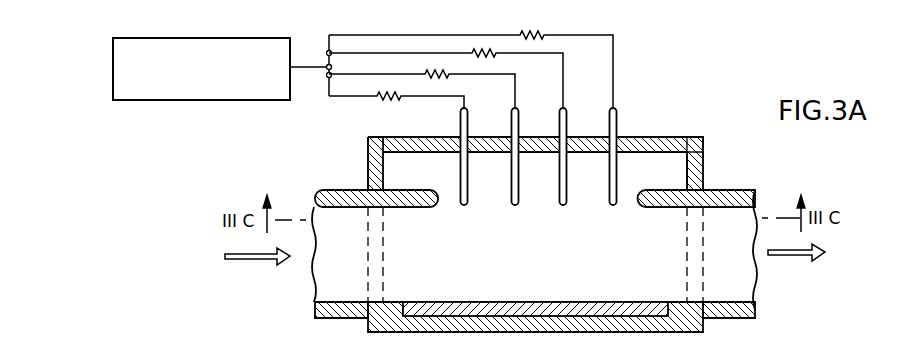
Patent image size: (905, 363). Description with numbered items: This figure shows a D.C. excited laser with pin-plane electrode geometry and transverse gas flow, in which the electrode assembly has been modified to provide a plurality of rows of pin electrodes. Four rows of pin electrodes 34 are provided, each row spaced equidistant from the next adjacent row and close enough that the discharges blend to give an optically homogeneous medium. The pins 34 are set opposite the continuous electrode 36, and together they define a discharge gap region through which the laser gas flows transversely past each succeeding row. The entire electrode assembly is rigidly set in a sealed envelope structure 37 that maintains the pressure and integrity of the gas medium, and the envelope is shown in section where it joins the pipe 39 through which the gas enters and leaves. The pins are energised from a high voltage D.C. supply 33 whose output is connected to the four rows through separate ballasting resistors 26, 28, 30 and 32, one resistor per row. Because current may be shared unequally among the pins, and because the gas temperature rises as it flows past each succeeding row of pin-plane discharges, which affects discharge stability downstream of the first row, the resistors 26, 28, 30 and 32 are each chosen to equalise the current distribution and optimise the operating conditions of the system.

The resistor 26 is at (388, 97).
The resistor 28 is at (447, 74).
The resistor 30 is at (500, 54).
The resistor 32 is at (541, 34).
The high voltage D.C. supply 33 is at (186, 38).
The pin electrodes 34 is at (511, 189).
The electrode 36 is at (618, 300).
The sealed envelope structure 37 is at (703, 150).
The pipe 39 is at (347, 190).